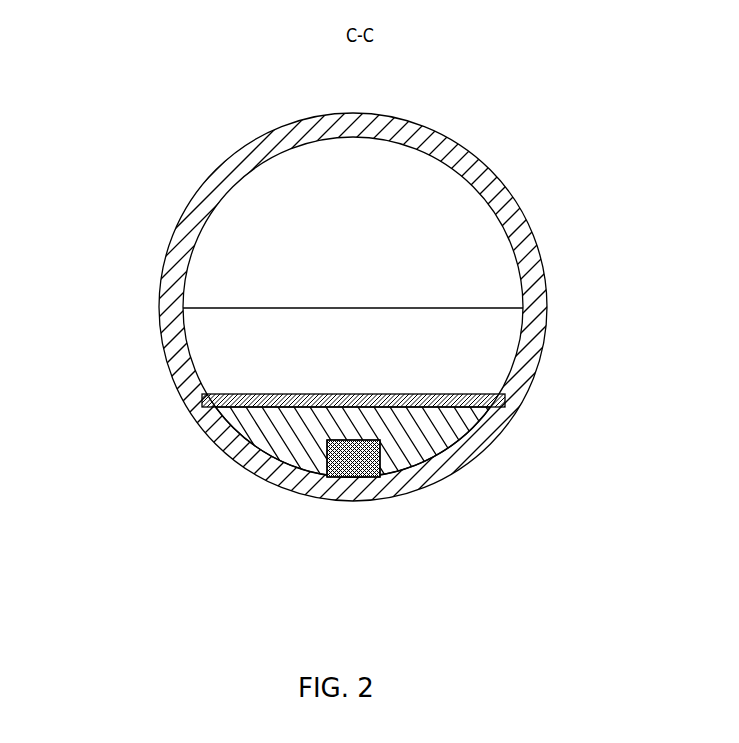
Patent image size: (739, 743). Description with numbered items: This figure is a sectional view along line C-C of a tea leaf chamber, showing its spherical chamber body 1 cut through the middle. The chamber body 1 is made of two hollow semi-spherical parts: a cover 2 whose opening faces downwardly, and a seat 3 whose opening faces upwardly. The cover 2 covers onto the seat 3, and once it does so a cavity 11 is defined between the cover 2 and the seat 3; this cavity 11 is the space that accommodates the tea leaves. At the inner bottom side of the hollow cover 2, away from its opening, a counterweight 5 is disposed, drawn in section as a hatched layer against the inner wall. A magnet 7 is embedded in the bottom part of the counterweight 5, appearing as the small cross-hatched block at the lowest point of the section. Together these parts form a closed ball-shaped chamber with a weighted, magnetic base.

The chamber body 1 is at (102, 142).
The cover 2 is at (187, 233).
The seat 3 is at (207, 438).
The counterweight 5 is at (312, 434).
The magnet 7 is at (350, 477).
The cavity 11 is at (410, 338).